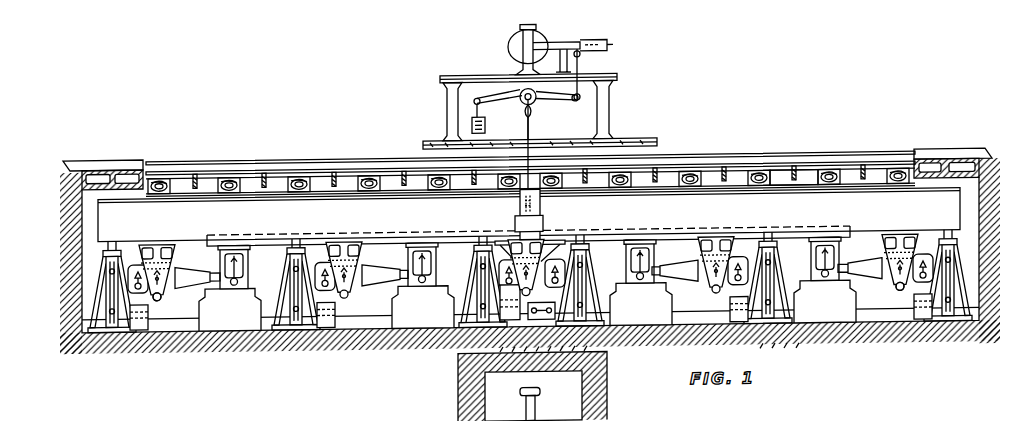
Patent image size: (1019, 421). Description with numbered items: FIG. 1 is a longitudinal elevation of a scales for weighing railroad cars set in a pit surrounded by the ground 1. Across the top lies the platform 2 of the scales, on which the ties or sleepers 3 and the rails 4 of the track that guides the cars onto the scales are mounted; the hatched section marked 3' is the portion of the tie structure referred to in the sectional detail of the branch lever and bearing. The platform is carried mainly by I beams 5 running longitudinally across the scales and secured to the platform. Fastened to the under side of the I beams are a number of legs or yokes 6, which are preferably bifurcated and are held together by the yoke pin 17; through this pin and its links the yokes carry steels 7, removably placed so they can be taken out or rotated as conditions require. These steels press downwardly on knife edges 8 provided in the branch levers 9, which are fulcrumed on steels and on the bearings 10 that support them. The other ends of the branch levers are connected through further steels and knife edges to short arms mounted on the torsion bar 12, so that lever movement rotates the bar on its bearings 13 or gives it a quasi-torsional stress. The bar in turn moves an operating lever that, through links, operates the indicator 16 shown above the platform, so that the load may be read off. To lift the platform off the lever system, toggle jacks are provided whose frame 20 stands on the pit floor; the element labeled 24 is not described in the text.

The ground 1 is at (56, 250).
The platform 2 is at (290, 149).
The ties or sleepers 3 is at (530, 158).
The grating section 3' is at (794, 156).
The rails 4 is at (928, 157).
The I beams 5 is at (96, 206).
The legs or yokes 6 is at (165, 294).
The steels 7 is at (162, 270).
The knife edges 8 is at (150, 273).
The branch levers 9 is at (377, 264).
The bearings 10 is at (349, 300).
The torsion bar 12 is at (862, 221).
The bearings 13 is at (803, 265).
The indicator 16 is at (502, 40).
The yoke pin 17 is at (348, 292).
The frame 20 is at (280, 273).
The jack 24 is at (800, 279).